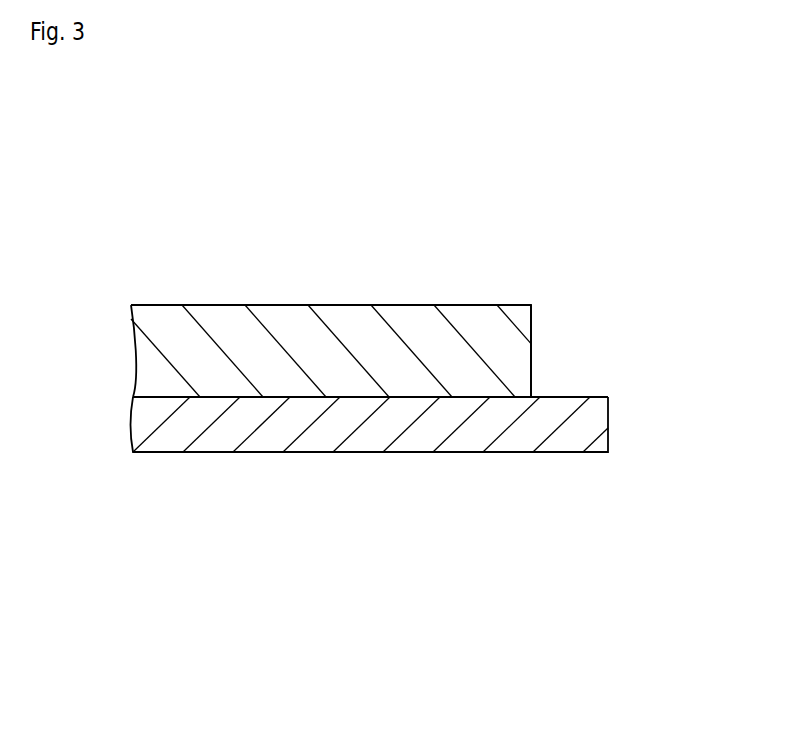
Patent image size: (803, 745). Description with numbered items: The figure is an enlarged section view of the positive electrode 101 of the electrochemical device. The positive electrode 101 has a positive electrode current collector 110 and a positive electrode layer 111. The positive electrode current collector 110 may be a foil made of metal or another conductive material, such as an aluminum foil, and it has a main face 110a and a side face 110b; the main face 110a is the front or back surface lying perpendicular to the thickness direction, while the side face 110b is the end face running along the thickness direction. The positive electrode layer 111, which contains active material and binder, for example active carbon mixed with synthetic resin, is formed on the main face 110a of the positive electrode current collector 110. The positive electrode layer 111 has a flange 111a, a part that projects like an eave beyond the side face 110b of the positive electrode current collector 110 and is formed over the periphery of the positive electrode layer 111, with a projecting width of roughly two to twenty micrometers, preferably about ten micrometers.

The positive electrode 101 is at (630, 226).
The positive electrode current collector 110 is at (360, 326).
The main face 110a is at (308, 397).
The side face 110b is at (532, 325).
The positive electrode layer 111 is at (455, 432).
The flange 111a is at (535, 385).